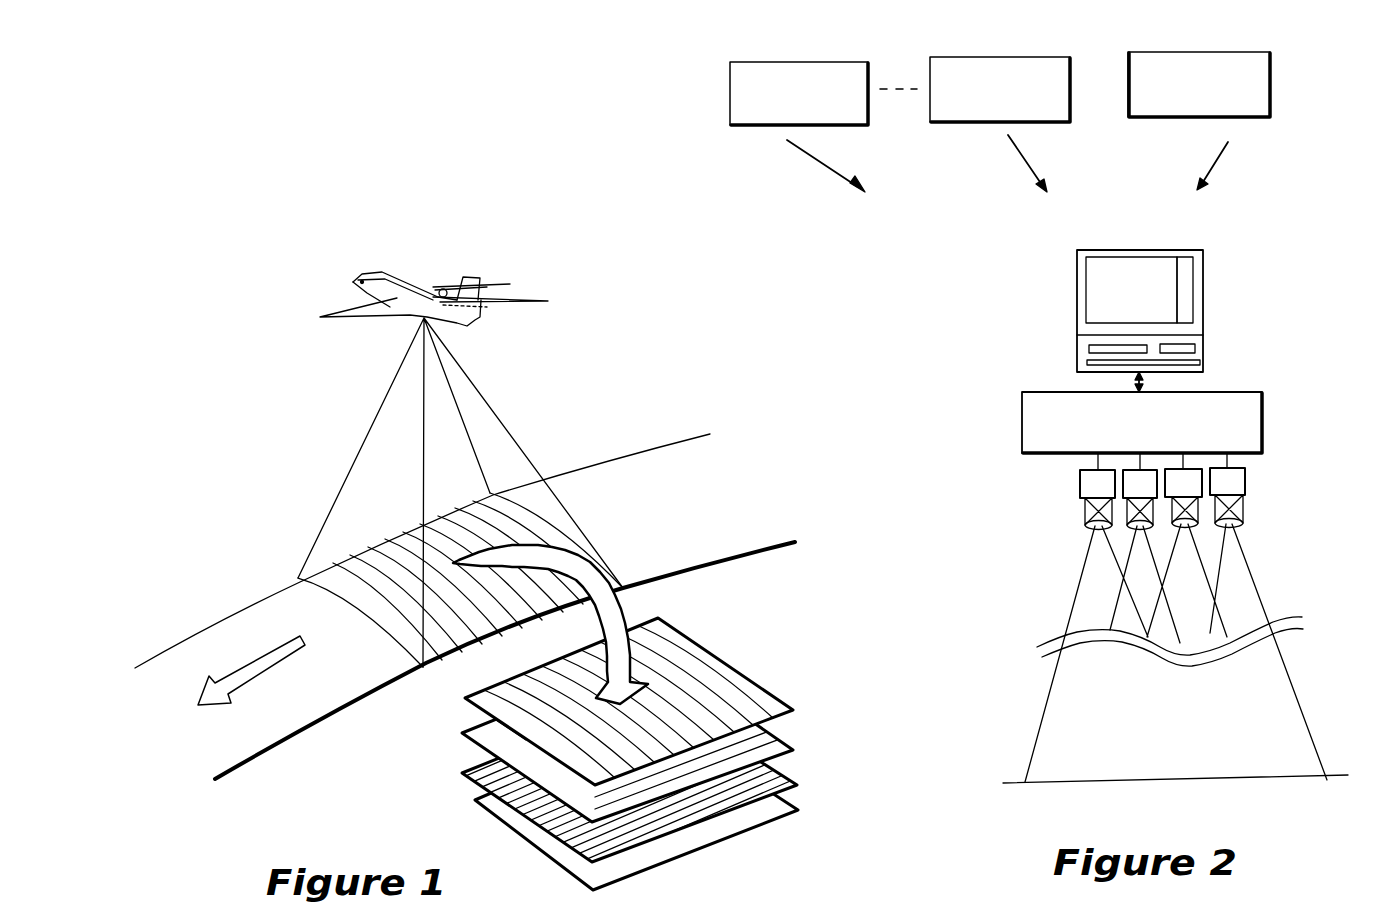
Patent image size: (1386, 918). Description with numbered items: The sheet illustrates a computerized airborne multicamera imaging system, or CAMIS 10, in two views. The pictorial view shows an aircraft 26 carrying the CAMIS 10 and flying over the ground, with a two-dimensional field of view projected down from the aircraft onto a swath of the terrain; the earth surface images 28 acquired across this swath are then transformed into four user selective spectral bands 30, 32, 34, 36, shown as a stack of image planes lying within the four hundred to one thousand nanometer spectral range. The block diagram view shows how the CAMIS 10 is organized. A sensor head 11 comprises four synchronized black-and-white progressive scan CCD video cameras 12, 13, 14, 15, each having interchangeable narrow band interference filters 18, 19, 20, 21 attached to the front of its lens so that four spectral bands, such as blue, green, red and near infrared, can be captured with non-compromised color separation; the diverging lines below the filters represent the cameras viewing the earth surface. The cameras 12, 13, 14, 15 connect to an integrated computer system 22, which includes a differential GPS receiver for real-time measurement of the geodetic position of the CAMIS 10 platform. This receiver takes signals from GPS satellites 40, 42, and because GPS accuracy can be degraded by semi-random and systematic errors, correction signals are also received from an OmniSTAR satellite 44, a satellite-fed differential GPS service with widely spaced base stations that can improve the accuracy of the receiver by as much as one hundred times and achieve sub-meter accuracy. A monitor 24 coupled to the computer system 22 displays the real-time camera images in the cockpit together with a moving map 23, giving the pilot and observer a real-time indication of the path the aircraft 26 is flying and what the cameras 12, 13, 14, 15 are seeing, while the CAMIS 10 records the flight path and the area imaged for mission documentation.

In FIG. 1, the computerized airborne multicamera imaging system (CAMIS) 10 is at (417, 302).
In FIG. 2, the computerized airborne multicamera imaging system (CAMIS) 10 is at (1277, 323).
In FIG. 2, the sensor head 11 is at (1252, 500).
In FIG. 2, the CCD video camera 12 is at (1093, 482).
In FIG. 2, the CCD video camera 13 is at (1122, 492).
In FIG. 2, the CCD video camera 14 is at (1190, 478).
In FIG. 2, the CCD video camera 15 is at (1237, 483).
In FIG. 2, the narrow band interference filter 18 is at (1090, 515).
In FIG. 2, the narrow band interference filter 19 is at (1142, 503).
In FIG. 2, the narrow band interference filter 20 is at (1182, 502).
In FIG. 2, the narrow band interference filter 21 is at (1223, 502).
In FIG. 2, the integrated computer system 22 is at (1263, 413).
In FIG. 2, the moving map 23 is at (1098, 297).
In FIG. 2, the monitor 24 is at (1110, 286).
In FIG. 1, the aircraft 26 is at (395, 273).
In FIG. 1, the earth surface images 28 is at (372, 617).
In FIG. 1, the spectral band 30 is at (768, 680).
In FIG. 1, the spectral band 32 is at (768, 733).
In FIG. 1, the spectral band 34 is at (770, 768).
In FIG. 1, the spectral band 36 is at (792, 808).
In FIG. 2, the GPS satellite 40 is at (775, 62).
In FIG. 2, the GPS satellite 42 is at (988, 56).
In FIG. 2, the OmniSTAR satellite 44 is at (1208, 52).